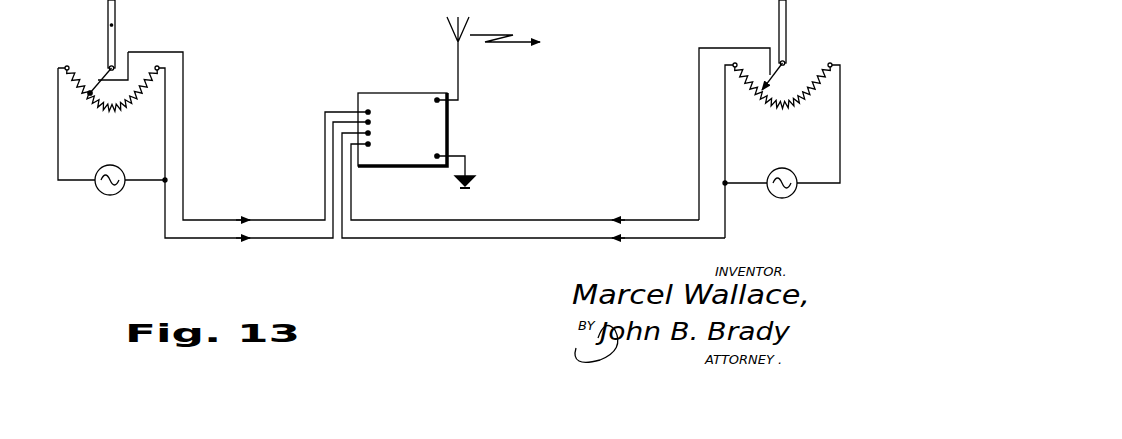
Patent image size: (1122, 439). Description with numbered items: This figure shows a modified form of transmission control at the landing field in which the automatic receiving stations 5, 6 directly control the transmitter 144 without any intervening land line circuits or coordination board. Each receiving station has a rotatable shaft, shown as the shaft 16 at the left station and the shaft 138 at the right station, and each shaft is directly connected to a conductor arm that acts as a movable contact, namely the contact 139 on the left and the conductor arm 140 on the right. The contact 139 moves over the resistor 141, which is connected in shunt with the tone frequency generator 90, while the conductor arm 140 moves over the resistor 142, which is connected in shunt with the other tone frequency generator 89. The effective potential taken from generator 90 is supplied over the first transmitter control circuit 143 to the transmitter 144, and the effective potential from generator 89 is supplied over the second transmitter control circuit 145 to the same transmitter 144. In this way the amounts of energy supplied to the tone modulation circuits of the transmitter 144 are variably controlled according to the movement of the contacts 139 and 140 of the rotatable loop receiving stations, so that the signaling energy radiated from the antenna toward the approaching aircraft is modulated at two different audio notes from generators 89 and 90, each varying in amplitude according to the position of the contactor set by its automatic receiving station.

The automatic receiving station 5 is at (70, 50).
The automatic receiving station 6 is at (712, 43).
The control lever rod 16 is at (117, 24).
The rotatable shaft 138 is at (784, 50).
The contact 139 is at (92, 82).
The conductor arm 140 is at (765, 73).
The resistor 141 is at (105, 113).
The resistor 142 is at (806, 105).
The tone frequency generator 90 is at (106, 200).
The tone frequency generator 89 is at (779, 202).
The circuit 143 is at (278, 228).
The circuit 145 is at (508, 228).
The transmitter 144 is at (376, 106).